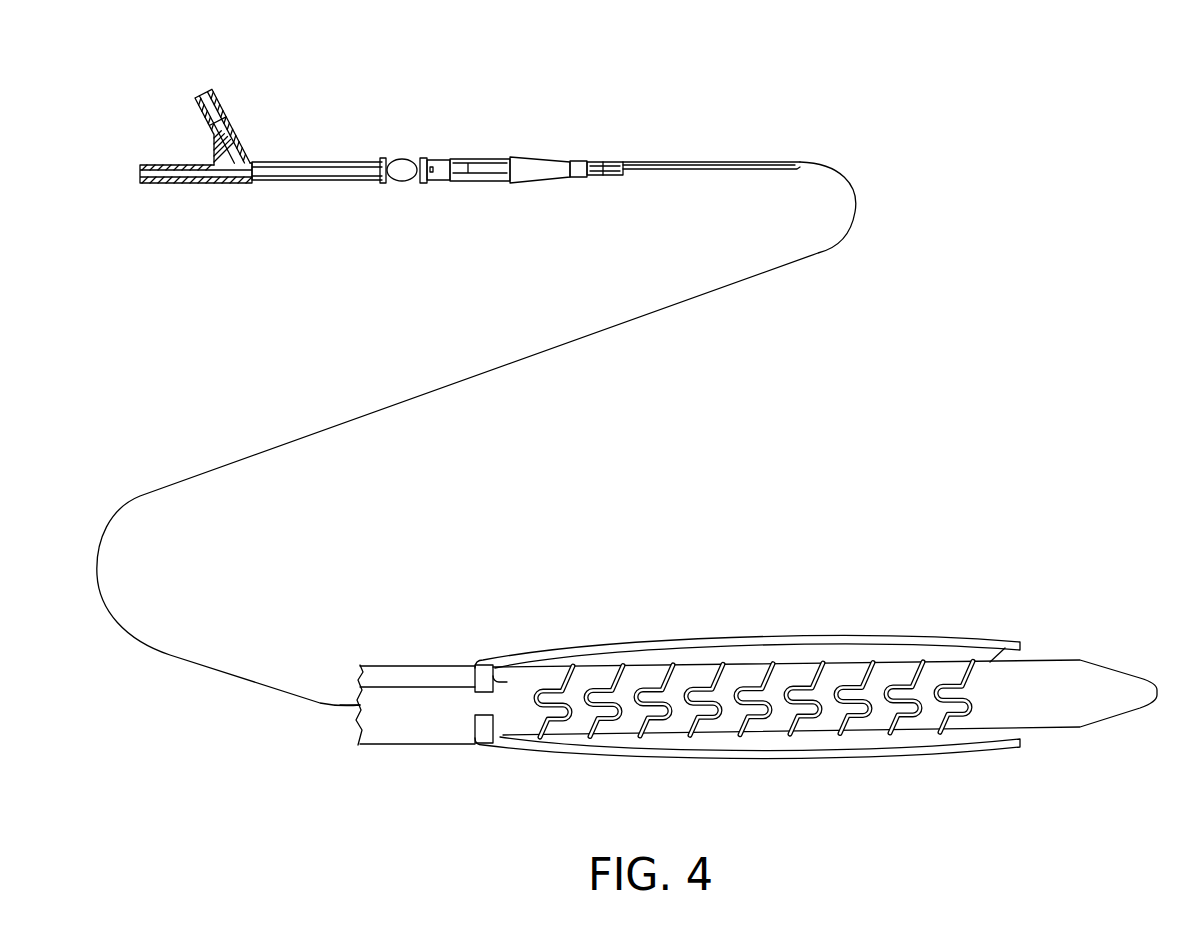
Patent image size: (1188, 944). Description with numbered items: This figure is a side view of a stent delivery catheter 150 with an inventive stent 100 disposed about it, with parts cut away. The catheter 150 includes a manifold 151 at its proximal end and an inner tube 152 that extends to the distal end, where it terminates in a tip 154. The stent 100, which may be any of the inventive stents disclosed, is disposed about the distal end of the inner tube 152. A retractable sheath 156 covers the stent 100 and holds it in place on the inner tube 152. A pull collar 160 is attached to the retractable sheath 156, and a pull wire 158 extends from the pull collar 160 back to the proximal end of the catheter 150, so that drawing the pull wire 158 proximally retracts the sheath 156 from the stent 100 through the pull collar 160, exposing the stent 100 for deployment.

The stent delivery catheter 150 is at (555, 100).
The manifold 151 is at (242, 142).
The pull wire 158 is at (427, 683).
The pull collar 160 is at (509, 673).
The inner tube 152 is at (1007, 643).
The retractable sheath 156 is at (810, 760).
The tip 154 is at (1130, 712).
The stent 100 is at (806, 660).